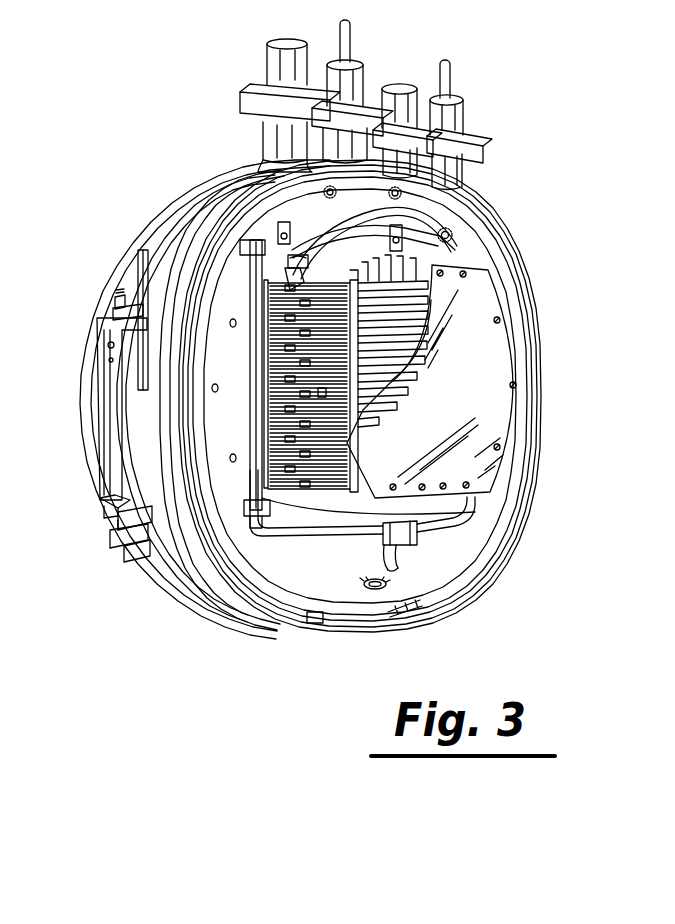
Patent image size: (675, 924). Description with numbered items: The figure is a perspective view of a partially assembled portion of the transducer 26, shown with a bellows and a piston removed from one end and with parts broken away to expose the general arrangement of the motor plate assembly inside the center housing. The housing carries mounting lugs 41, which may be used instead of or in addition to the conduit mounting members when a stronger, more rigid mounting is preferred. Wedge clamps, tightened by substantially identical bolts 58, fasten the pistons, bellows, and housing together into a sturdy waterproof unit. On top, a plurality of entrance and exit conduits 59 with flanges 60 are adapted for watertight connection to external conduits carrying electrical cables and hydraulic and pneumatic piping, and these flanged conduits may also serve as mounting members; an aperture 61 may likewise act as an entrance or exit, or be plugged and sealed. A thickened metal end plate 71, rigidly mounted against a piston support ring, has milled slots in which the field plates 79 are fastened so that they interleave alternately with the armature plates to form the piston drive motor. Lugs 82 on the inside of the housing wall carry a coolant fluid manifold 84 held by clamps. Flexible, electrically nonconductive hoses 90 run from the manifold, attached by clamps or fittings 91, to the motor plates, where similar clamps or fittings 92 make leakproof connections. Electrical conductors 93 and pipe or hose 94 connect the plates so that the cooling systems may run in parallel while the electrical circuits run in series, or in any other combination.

The relay assembly 26 is at (538, 159).
The mounting lugs 41 is at (142, 375).
The bolts 58 is at (116, 530).
The entrance and exit conduits 59 is at (272, 136).
The flanges 60 is at (251, 93).
The aperture 61 is at (373, 578).
The end plate 71 is at (507, 338).
The field plates 79 is at (413, 368).
The lugs 82 is at (242, 505).
The coolant fluid manifold 84 is at (478, 510).
The flexible hoses 90 is at (250, 447).
The clamps or fittings 91 is at (262, 422).
The clamps or fittings 92 is at (248, 384).
The electrical conductors 93 is at (317, 246).
The pipe or hose 94 is at (400, 567).